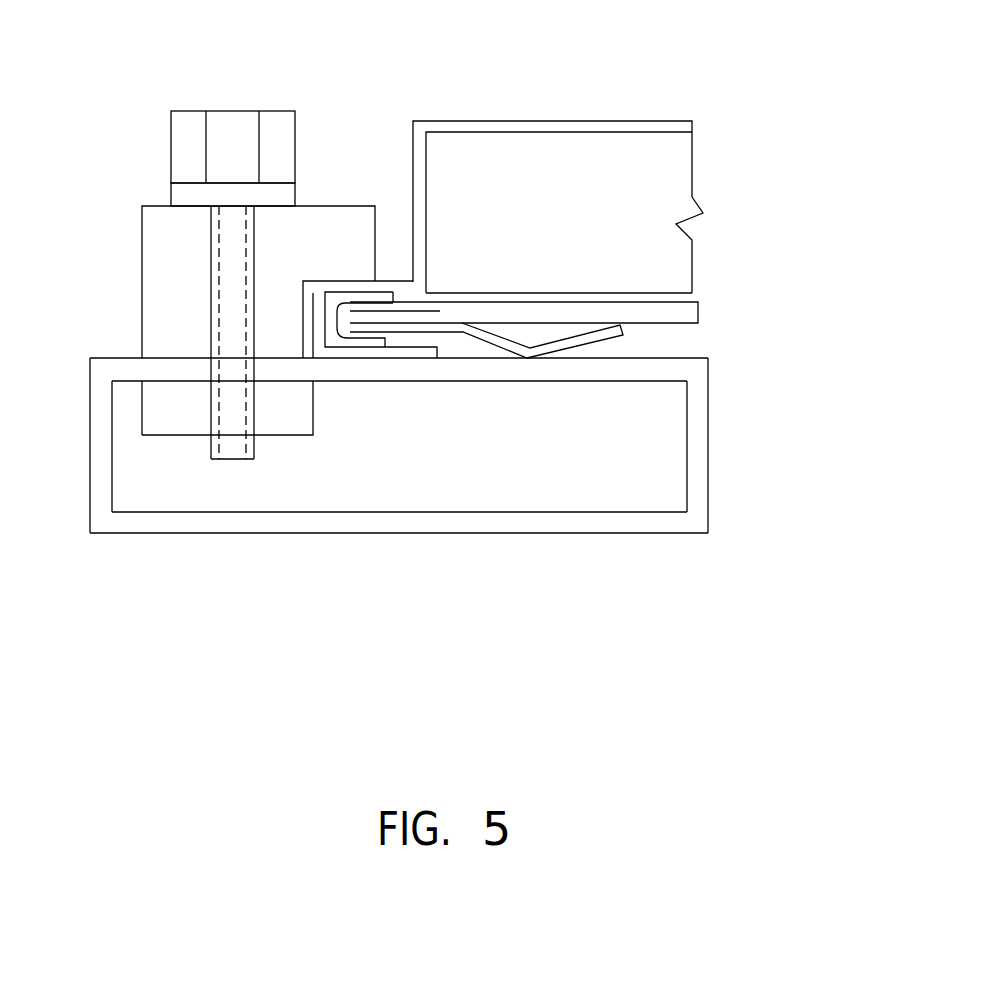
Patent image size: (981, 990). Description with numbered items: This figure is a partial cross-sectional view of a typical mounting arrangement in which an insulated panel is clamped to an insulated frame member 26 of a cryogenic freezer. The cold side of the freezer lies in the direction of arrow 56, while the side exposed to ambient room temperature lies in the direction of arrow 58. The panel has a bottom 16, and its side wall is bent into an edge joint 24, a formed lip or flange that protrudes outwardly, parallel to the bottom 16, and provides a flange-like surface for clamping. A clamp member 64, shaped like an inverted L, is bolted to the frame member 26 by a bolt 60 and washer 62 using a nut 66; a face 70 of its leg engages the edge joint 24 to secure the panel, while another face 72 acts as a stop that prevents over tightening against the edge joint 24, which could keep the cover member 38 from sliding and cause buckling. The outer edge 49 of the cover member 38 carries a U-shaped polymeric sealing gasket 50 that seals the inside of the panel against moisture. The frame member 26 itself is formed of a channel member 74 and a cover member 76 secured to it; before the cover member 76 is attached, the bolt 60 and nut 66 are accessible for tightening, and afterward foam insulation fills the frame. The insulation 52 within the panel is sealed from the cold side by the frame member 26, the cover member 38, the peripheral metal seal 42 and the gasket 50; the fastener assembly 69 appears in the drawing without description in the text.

The bottom 16 is at (596, 149).
The edge joint 24 is at (474, 388).
The frame member 26 is at (478, 487).
The cover member 38 is at (678, 323).
The peripheral metal seal 42 is at (588, 348).
The outer edge 49 is at (425, 303).
The sealing gasket 50 is at (365, 338).
The insulation 52 is at (668, 180).
The arrow 56 is at (474, 487).
The arrow 58 is at (477, 120).
The bolt 60 is at (192, 110).
The washer 62 is at (170, 197).
The clamp member 64 is at (141, 278).
The nut 66 is at (288, 420).
The fastener assembly 69 is at (240, 240).
The face 70 is at (302, 293).
The face 72 is at (165, 356).
The channel member 74 is at (710, 389).
The cover member 76 is at (612, 523).